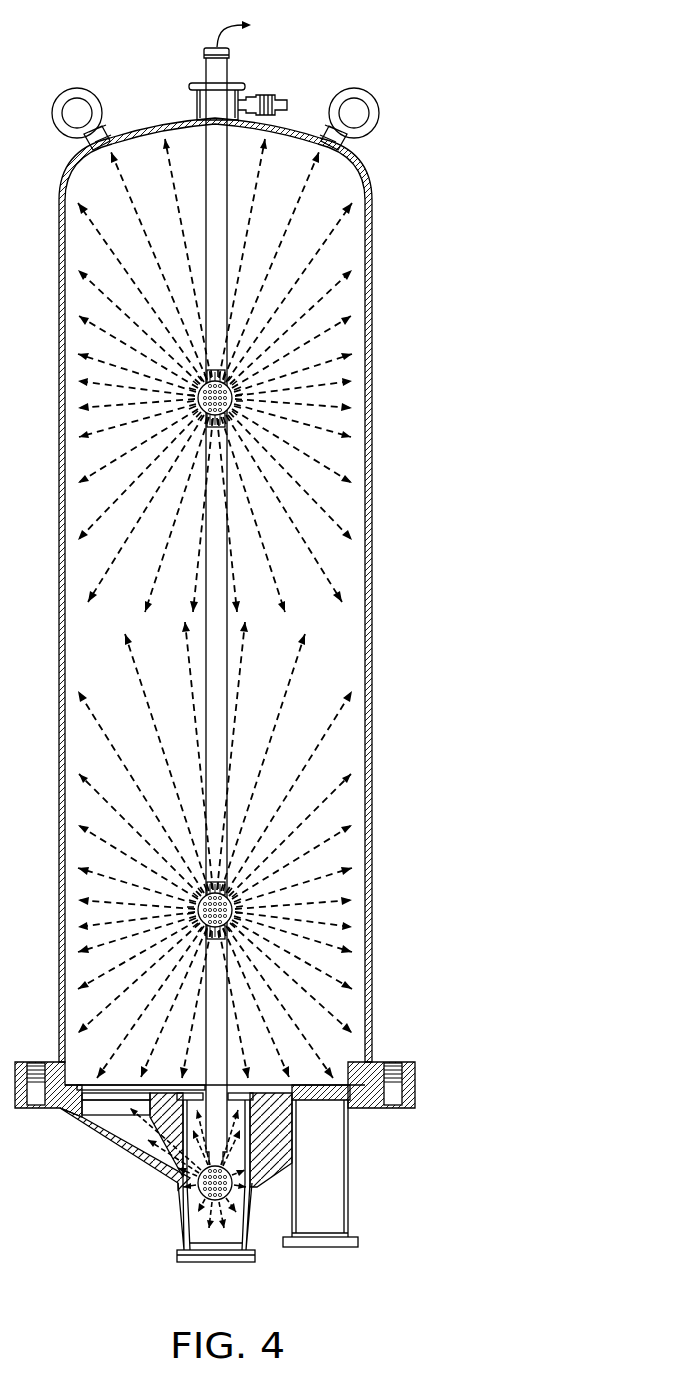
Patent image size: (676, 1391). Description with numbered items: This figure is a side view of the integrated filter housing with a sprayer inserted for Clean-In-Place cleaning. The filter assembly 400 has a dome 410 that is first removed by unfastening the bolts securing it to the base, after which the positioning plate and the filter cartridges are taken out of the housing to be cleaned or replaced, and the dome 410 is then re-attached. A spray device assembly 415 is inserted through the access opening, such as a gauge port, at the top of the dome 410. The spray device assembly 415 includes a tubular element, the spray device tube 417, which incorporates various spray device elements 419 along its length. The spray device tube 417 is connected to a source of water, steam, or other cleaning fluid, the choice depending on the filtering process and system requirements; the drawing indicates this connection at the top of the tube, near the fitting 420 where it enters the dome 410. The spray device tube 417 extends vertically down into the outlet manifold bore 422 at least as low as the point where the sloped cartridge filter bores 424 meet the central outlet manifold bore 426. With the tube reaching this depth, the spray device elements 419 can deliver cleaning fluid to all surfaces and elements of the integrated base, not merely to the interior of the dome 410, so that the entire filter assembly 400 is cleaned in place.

The filter assembly 400 is at (289, 647).
The dome 410 is at (373, 308).
The spray device assembly 415 is at (227, 605).
The spray device tube 417 is at (222, 628).
The spray device element 419 is at (240, 398).
The inlet fitting 420 is at (205, 83).
The outlet manifold bore 422 is at (230, 1085).
The sloped cartridge filter bore 424 is at (152, 1170).
The central outlet manifold bore 426 is at (223, 1238).